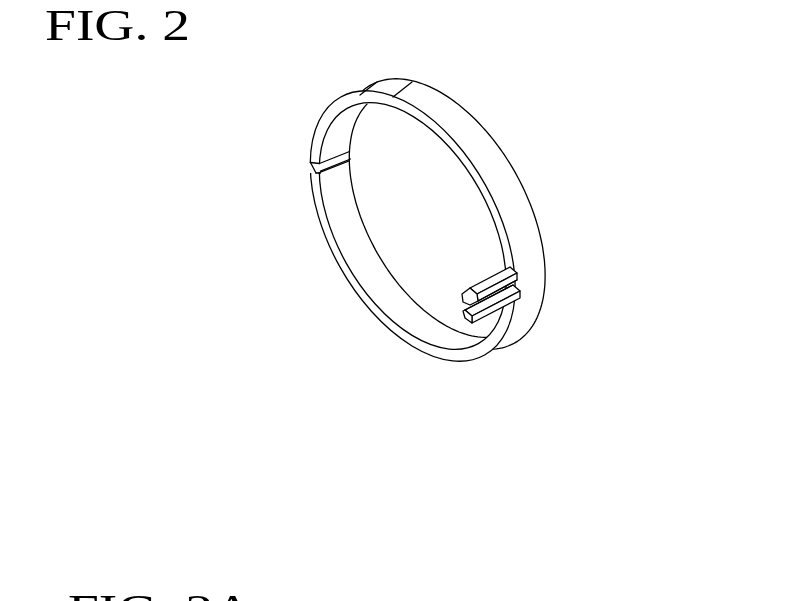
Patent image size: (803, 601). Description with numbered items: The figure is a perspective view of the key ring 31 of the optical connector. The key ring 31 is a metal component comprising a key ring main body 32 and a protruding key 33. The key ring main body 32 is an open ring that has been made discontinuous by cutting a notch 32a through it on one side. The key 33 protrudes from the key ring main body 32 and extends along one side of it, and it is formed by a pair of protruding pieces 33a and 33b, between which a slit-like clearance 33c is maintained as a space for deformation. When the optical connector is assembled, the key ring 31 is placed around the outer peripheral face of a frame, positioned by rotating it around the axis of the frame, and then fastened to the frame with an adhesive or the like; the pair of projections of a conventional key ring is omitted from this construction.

The key ring 31 is at (434, 236).
The key ring main body 32 is at (388, 225).
The notch 32a is at (312, 172).
The protruding key 33 is at (447, 320).
The protruding piece 33a is at (484, 296).
The protruding piece 33b is at (475, 323).
The slit-like clearance 33c is at (463, 304).